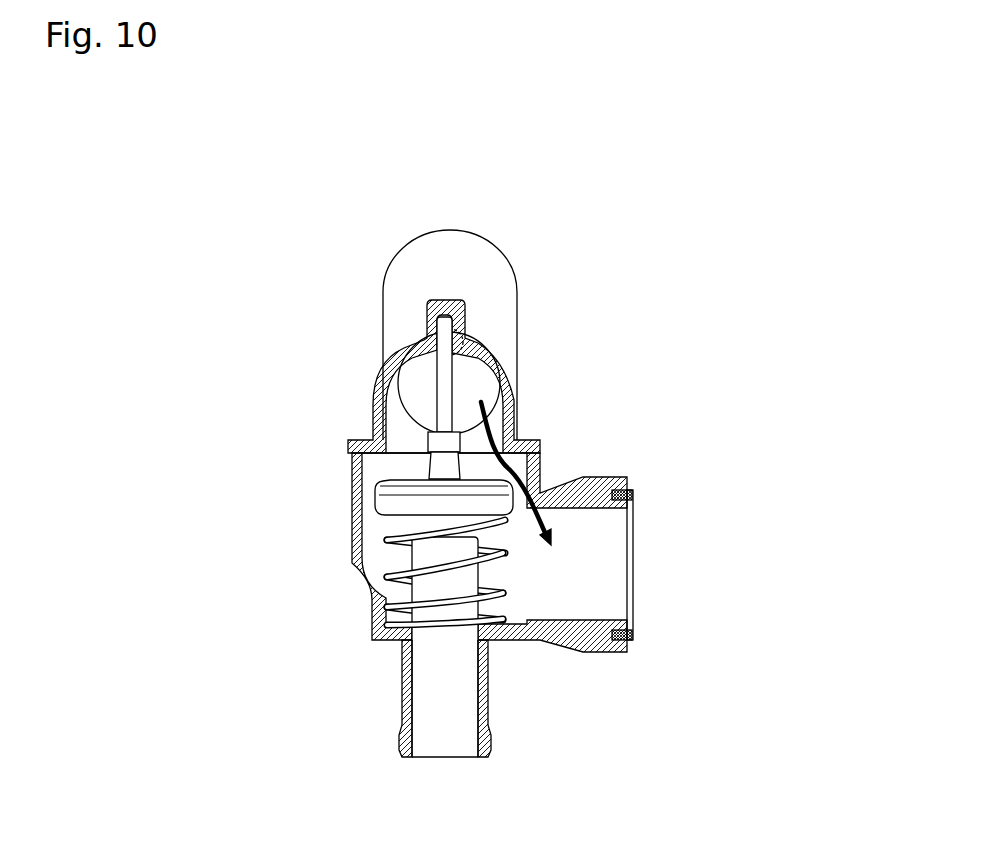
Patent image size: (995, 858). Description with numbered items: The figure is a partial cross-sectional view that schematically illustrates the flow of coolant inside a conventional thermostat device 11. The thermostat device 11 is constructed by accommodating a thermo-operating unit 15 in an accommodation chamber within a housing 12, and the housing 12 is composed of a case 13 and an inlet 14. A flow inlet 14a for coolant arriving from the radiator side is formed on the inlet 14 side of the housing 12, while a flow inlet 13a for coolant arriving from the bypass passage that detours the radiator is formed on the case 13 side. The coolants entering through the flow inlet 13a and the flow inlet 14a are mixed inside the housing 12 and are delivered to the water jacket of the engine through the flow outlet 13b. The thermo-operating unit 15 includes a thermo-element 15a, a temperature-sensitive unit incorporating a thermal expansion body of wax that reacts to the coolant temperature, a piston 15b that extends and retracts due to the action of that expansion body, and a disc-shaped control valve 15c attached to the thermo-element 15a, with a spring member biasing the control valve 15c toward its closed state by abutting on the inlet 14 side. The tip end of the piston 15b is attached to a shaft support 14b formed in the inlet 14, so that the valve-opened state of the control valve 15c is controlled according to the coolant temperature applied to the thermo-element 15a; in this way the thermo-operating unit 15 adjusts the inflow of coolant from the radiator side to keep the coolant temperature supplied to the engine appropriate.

The thermostat device 11 is at (660, 276).
The housing 12 is at (535, 504).
The case 13 is at (603, 653).
The flow inlet 13a is at (442, 737).
The flow outlet 13b is at (603, 575).
The inlet 14 is at (517, 338).
The flow inlet 14a is at (428, 233).
The shaft support 14b is at (470, 342).
The thermo-operating unit 15 is at (374, 548).
The thermo-element 15a is at (412, 578).
The piston 15b is at (437, 400).
The control valve 15c is at (393, 502).